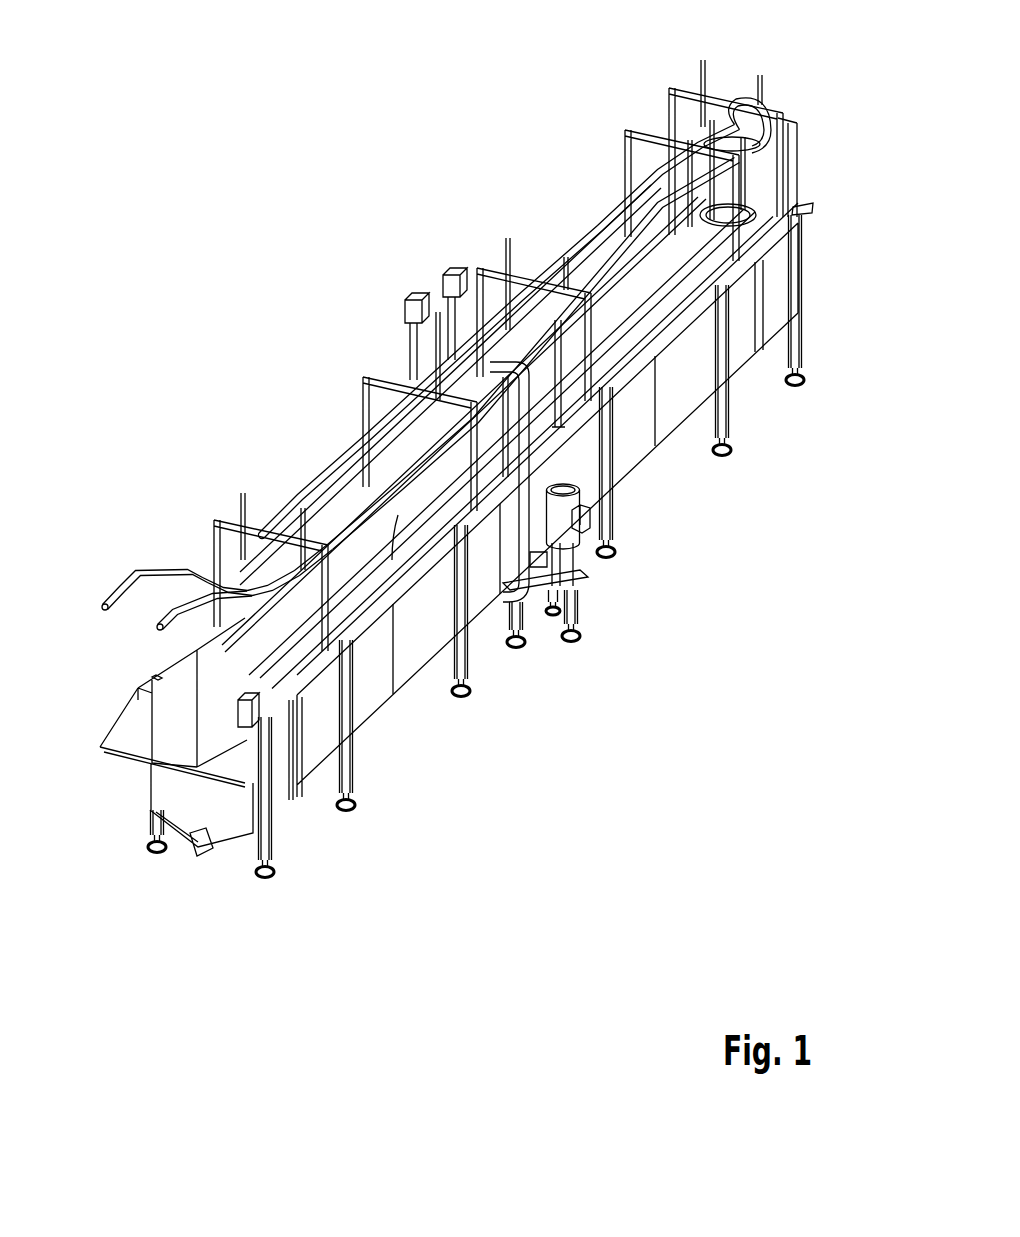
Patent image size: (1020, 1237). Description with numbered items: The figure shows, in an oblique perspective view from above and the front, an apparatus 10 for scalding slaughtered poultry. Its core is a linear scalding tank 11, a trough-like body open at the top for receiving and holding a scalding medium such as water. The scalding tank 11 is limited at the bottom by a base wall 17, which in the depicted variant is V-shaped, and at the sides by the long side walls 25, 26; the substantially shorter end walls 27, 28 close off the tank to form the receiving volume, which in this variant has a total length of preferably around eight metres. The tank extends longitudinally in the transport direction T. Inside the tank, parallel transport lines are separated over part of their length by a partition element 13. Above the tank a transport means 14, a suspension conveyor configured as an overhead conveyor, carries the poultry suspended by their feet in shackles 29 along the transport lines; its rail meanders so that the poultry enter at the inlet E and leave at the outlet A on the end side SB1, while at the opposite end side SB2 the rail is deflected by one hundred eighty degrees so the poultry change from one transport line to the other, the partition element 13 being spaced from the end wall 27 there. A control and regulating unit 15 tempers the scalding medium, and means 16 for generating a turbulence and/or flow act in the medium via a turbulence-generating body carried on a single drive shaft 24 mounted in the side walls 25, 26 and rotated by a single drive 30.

The apparatus 10 is at (432, 152).
The scalding tank 11 is at (630, 302).
The partition element 13 is at (226, 712).
The transport means 14 is at (136, 548).
The control and regulating unit 15 is at (420, 290).
The means for generating a turbulence and/or flow 16 is at (585, 465).
The base wall 17 is at (373, 718).
The drive shaft 24 is at (545, 567).
The side wall 25 is at (407, 675).
The side wall 26 is at (213, 660).
The end wall 27 is at (793, 205).
The end wall 28 is at (172, 790).
The shackles 29 is at (398, 515).
The drive 30 is at (575, 518).
The outlet A is at (104, 608).
The inlet E is at (151, 641).
The transport direction T is at (360, 330).
The end side SB1 is at (316, 908).
The end side SB2 is at (726, 57).